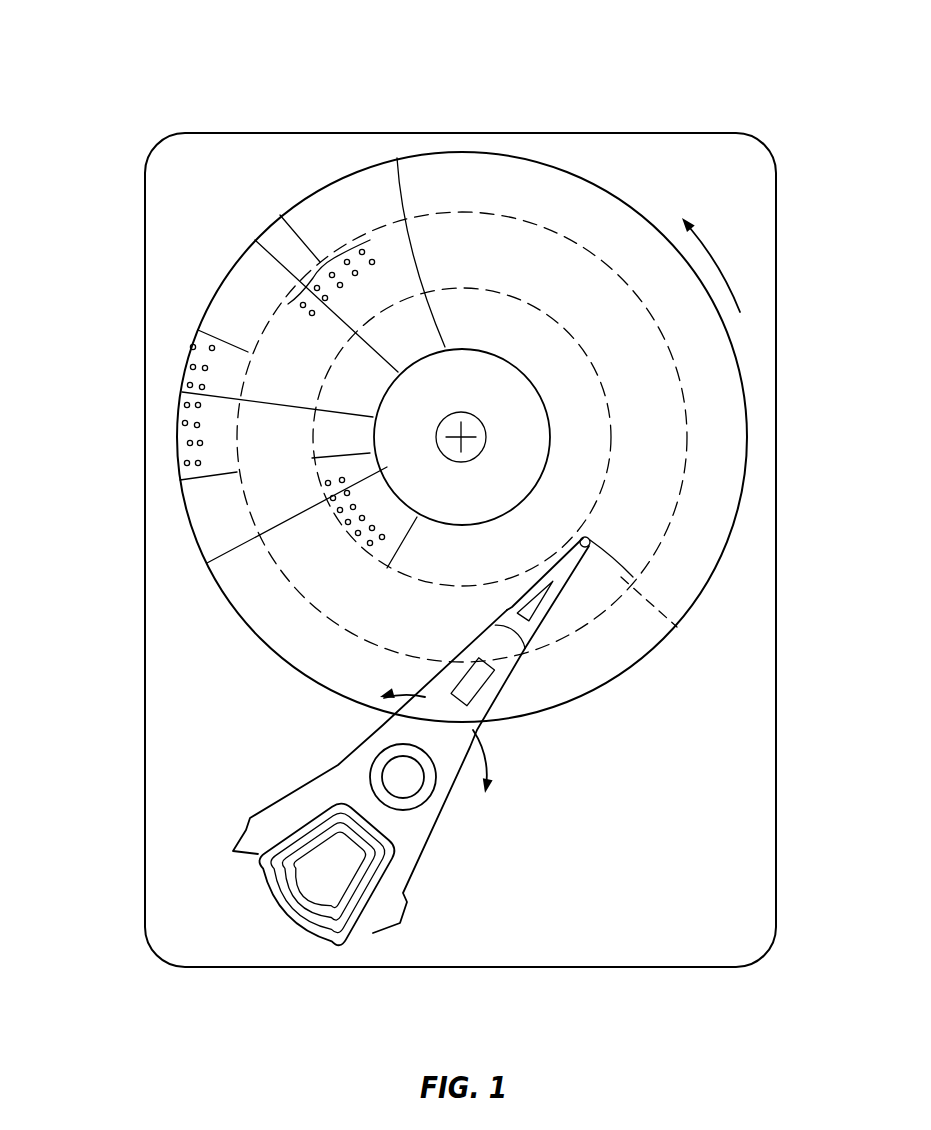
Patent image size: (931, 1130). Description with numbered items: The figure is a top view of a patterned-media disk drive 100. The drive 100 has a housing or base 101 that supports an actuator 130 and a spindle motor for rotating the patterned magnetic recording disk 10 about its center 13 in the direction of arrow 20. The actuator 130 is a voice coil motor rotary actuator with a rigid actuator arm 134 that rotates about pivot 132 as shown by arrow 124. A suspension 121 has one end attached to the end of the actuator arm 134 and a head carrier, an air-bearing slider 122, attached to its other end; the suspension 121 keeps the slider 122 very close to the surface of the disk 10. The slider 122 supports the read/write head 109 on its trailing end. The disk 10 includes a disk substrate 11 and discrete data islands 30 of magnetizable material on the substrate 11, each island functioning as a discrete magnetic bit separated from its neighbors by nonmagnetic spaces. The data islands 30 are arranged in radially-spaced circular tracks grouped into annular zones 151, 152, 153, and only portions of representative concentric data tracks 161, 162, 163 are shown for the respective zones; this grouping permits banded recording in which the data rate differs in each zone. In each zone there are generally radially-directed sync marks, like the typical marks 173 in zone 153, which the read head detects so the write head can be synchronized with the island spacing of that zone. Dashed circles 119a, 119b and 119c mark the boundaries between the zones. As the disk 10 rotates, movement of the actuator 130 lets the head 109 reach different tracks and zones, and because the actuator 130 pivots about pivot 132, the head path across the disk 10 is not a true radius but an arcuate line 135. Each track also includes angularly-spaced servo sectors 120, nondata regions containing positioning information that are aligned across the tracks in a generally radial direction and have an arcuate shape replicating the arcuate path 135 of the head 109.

The patterned-media disk drive 100 is at (145, 46).
The housing or base 101 is at (700, 133).
The patterned magnetic recording disk 10 is at (328, 212).
The disk substrate 11 is at (735, 347).
The center of disk 13 is at (473, 423).
The direction of disk rotation arrow 20 is at (712, 247).
The data islands 30 is at (340, 285).
The read/write head 109 is at (592, 540).
The inner zone boundary 119a is at (485, 295).
The middle zone boundary 119b is at (510, 223).
The outer zone boundary 119c is at (605, 190).
The servo sectors 120 is at (440, 176).
The suspension 121 is at (508, 622).
The air-bearing slider 122 is at (633, 577).
The actuator rotation arrow 124 is at (487, 757).
The actuator 130 is at (245, 840).
The pivot 132 is at (393, 772).
The actuator arm 134 is at (468, 658).
The arcuate line 135 is at (655, 608).
The zone 151 is at (596, 402).
The zone 152 is at (663, 422).
The zone 153 is at (732, 435).
The data track 161 is at (313, 490).
The data track 162 is at (300, 235).
The data track 163 is at (181, 336).
The sync marks 173 is at (222, 332).